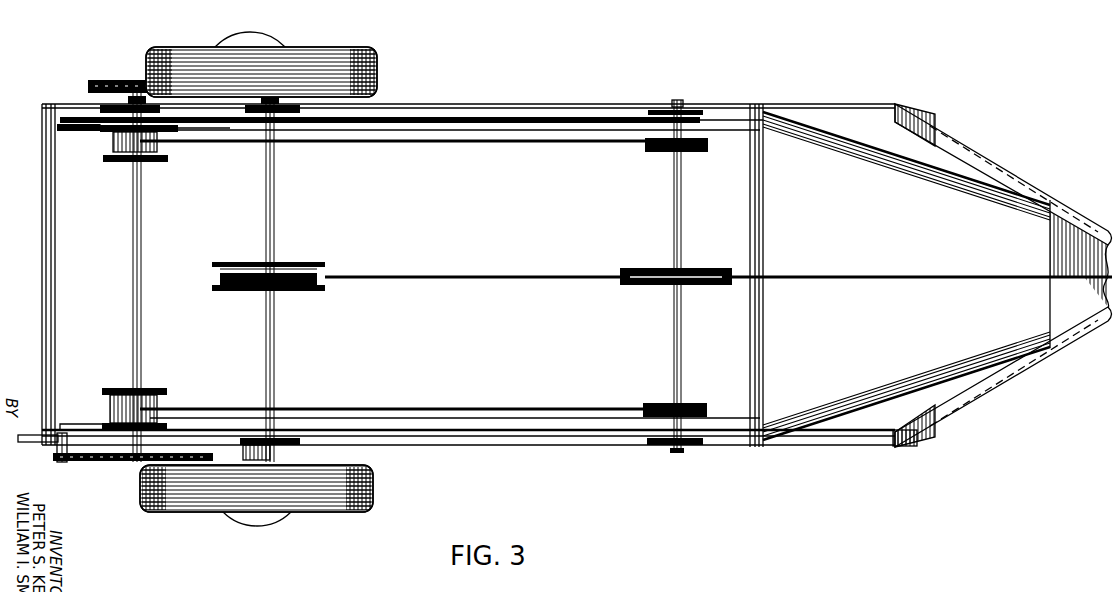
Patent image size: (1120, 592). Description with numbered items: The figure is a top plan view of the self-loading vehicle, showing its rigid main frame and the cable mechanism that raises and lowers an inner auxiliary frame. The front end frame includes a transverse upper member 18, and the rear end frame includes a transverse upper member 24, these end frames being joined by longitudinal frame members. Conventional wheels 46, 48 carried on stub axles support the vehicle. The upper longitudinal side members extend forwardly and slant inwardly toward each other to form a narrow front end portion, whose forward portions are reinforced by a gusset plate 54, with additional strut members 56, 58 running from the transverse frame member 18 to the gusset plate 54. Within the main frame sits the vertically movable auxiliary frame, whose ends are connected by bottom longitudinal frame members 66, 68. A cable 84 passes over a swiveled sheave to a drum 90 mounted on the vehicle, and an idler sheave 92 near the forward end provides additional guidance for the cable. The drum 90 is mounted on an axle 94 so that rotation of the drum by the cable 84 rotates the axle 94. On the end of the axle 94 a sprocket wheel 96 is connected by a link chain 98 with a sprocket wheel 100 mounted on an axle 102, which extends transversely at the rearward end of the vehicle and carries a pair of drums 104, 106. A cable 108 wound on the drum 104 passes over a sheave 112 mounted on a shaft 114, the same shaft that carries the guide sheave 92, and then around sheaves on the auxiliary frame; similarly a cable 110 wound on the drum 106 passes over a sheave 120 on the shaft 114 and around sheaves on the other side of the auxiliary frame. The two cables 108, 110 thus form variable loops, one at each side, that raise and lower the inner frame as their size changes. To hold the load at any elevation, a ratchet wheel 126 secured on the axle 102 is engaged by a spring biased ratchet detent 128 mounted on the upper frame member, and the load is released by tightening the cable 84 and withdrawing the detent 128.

The transverse upper member 18 is at (760, 210).
The transverse upper member 24 is at (44, 228).
The wheel 46 is at (195, 500).
The wheel 48 is at (381, 50).
The gusset plate 54 is at (1060, 247).
The strut member 56 is at (932, 380).
The strut member 58 is at (912, 170).
The bottom longitudinal frame member 66 is at (92, 128).
The bottom longitudinal frame member 68 is at (86, 424).
The cable 84 is at (500, 276).
The drum 90 is at (310, 292).
The idler sheave 92 is at (650, 287).
The axle 94 is at (275, 222).
The sprocket wheel 96 is at (303, 52).
The link chain 98 is at (203, 78).
The sprocket wheel 100 is at (125, 79).
The axle 102 is at (143, 231).
The drum 104 is at (158, 161).
The drum 106 is at (160, 391).
The cable 108 is at (470, 143).
The cable 110 is at (456, 410).
The sheave 112 is at (652, 150).
The shaft 114 is at (675, 225).
The sheave 120 is at (655, 404).
The ratchet wheel 126 is at (113, 462).
The ratchet detent 128 is at (57, 446).